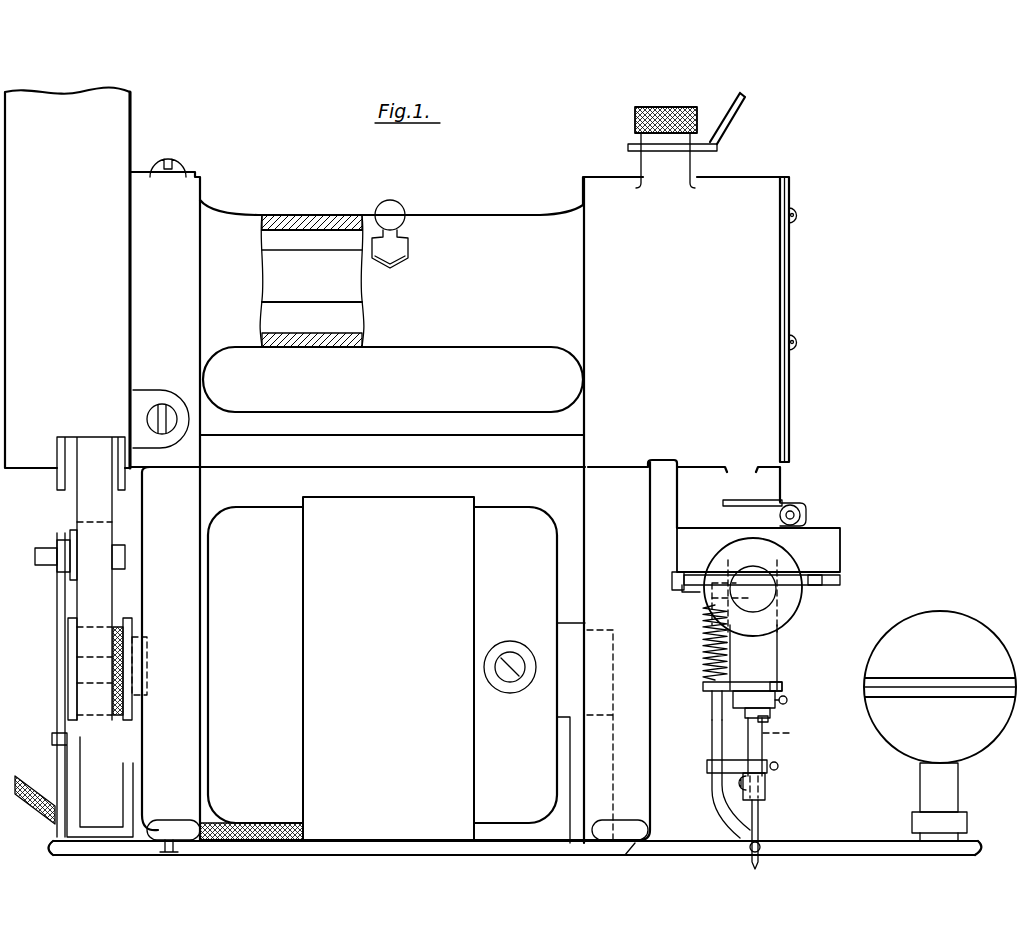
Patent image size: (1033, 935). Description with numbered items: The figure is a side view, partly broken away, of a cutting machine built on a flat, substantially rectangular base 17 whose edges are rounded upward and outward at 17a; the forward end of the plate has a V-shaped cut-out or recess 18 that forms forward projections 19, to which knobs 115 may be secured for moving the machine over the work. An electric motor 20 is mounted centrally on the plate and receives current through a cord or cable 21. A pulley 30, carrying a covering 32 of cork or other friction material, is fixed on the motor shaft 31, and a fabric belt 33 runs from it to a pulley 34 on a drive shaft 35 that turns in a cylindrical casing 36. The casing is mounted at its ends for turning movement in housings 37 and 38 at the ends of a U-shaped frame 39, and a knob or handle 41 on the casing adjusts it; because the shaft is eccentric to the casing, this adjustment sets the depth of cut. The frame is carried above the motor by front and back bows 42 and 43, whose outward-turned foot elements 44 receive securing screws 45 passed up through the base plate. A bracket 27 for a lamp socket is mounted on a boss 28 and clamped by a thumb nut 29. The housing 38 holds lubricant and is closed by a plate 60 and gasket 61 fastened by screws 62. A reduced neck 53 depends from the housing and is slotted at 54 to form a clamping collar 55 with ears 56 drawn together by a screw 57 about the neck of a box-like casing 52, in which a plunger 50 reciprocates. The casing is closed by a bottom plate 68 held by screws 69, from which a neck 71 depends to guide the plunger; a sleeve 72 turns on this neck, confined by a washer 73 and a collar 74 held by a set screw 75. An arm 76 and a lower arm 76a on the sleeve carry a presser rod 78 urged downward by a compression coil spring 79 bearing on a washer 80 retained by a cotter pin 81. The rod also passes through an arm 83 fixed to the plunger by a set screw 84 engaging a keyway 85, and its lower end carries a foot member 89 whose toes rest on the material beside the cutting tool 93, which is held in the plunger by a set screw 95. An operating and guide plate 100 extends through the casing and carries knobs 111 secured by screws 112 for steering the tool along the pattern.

The base 17 is at (328, 844).
The rounded edges 17a is at (68, 843).
The cut-out or recess 18 is at (682, 847).
The projections 19 is at (977, 847).
The electric motor 20 is at (419, 668).
The cord or cable 21 is at (30, 772).
The bracket 27 is at (750, 110).
The boss 28 is at (686, 166).
The thumb nut 29 is at (681, 112).
The pulley 30 is at (68, 640).
The motor shaft 31 is at (70, 697).
The covering 32 is at (118, 670).
The fabric belt 33 is at (92, 508).
The pulley 34 is at (68, 483).
The drive shaft 35 is at (287, 290).
The cylindrical casing 36 is at (450, 220).
The housing 37 is at (205, 192).
The housing 38 is at (608, 202).
The U-shaped frame 39 is at (503, 410).
The knob or handle 41 is at (396, 205).
The front bow 42 is at (181, 515).
The back bow 43 is at (600, 512).
The foot elements 44 is at (188, 822).
The securing screws 45 is at (158, 853).
The plunger 50 is at (762, 748).
The box-like casing 52 is at (842, 547).
The reduced neck 53 is at (768, 487).
The slot 54 is at (742, 498).
The clamping collar 55 is at (780, 515).
The ears 56 is at (802, 518).
The screw 57 is at (804, 510).
The plate 60 is at (791, 252).
The gasket 61 is at (787, 293).
The screws 62 is at (798, 214).
The bottom plate 68 is at (688, 580).
The screws 69 is at (684, 578).
The neck 71 is at (770, 718).
The sleeve 72 is at (768, 652).
The washer 73 is at (778, 696).
The collar 74 is at (745, 713).
The set screw 75 is at (788, 702).
The arm 76 is at (797, 612).
The lower arm 76a is at (780, 680).
The presser rod 78 is at (706, 655).
The compression coil spring 79 is at (706, 630).
The washer 80 is at (706, 686).
The cotter pin 81 is at (710, 698).
The arm 83 is at (716, 758).
The set screw 84 is at (779, 766).
The keyway 85 is at (792, 735).
The foot member 89 is at (765, 846).
The cutting tool 93 is at (762, 822).
The set screw 95 is at (738, 783).
The plate 100 is at (676, 560).
The knobs 111 is at (793, 601).
The screws 112 is at (778, 587).
The knobs 115 is at (938, 625).